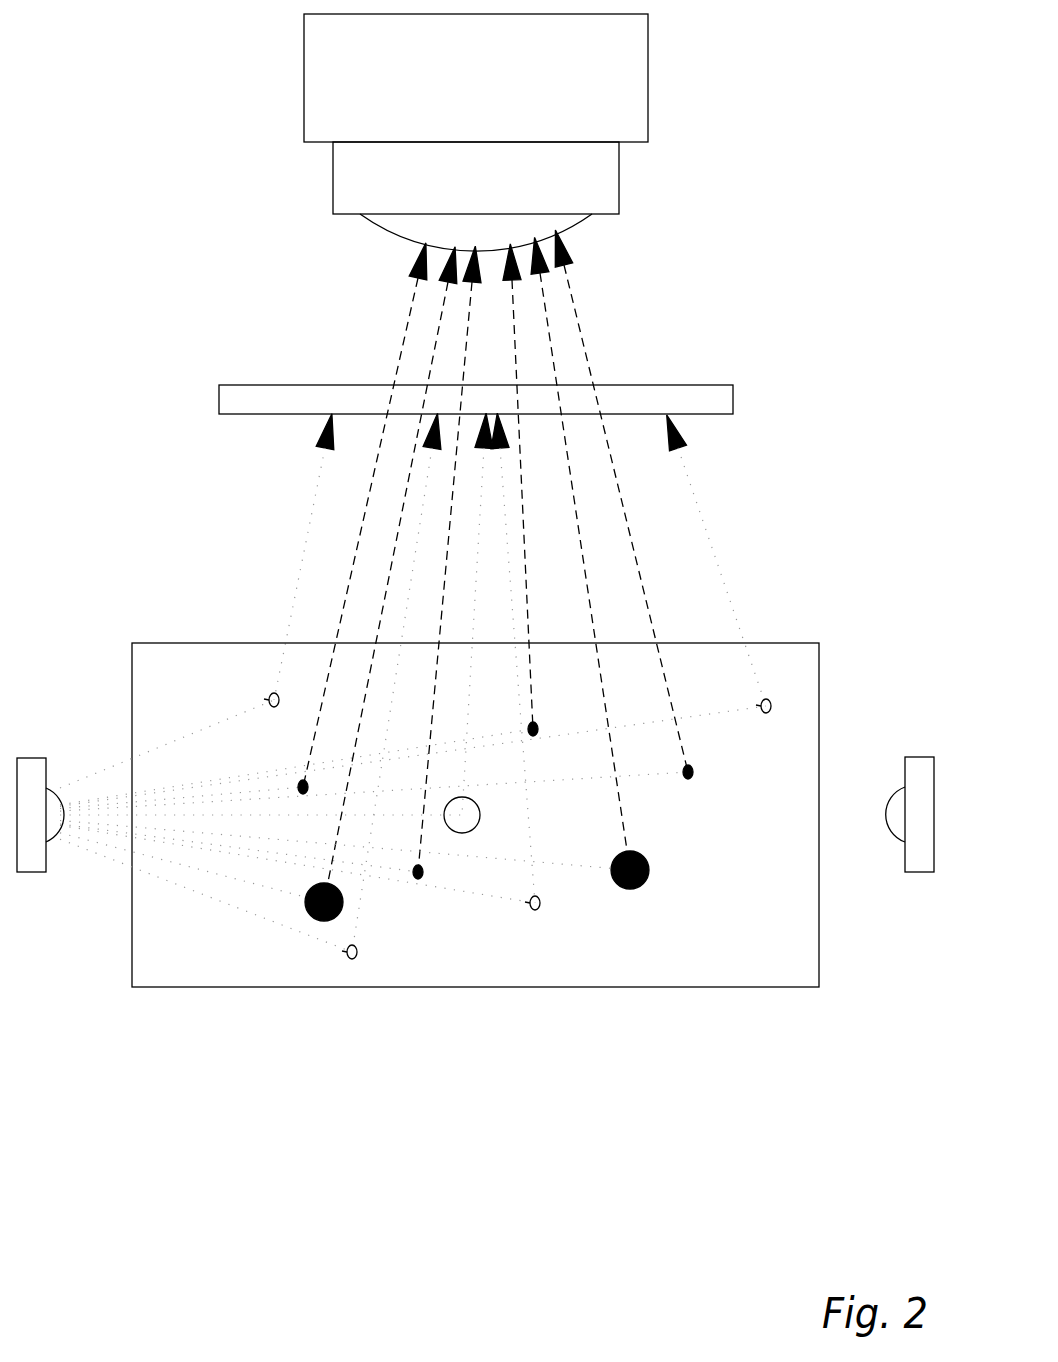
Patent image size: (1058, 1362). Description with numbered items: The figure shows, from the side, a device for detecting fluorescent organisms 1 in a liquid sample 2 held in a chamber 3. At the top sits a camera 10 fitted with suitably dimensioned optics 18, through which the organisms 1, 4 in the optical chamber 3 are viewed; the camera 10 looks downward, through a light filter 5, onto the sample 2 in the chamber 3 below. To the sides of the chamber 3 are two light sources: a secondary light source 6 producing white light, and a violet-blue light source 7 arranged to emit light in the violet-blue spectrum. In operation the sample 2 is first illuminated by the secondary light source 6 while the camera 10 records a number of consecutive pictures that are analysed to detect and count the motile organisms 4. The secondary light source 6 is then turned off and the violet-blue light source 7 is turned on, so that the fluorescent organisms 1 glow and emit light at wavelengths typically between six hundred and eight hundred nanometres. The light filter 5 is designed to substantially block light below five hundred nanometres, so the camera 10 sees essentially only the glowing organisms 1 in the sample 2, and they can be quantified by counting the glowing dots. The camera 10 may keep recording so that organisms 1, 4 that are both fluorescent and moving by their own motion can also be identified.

The fluorescent organisms 1 is at (307, 912).
The liquid sample 2 is at (475, 883).
The chamber 3 is at (628, 948).
The motile organisms 4 is at (462, 834).
The light filter 5 is at (703, 403).
The secondary light source 6 is at (919, 857).
The violet-blue light source 7 is at (33, 855).
The camera 10 is at (507, 91).
The optics 18 is at (415, 226).